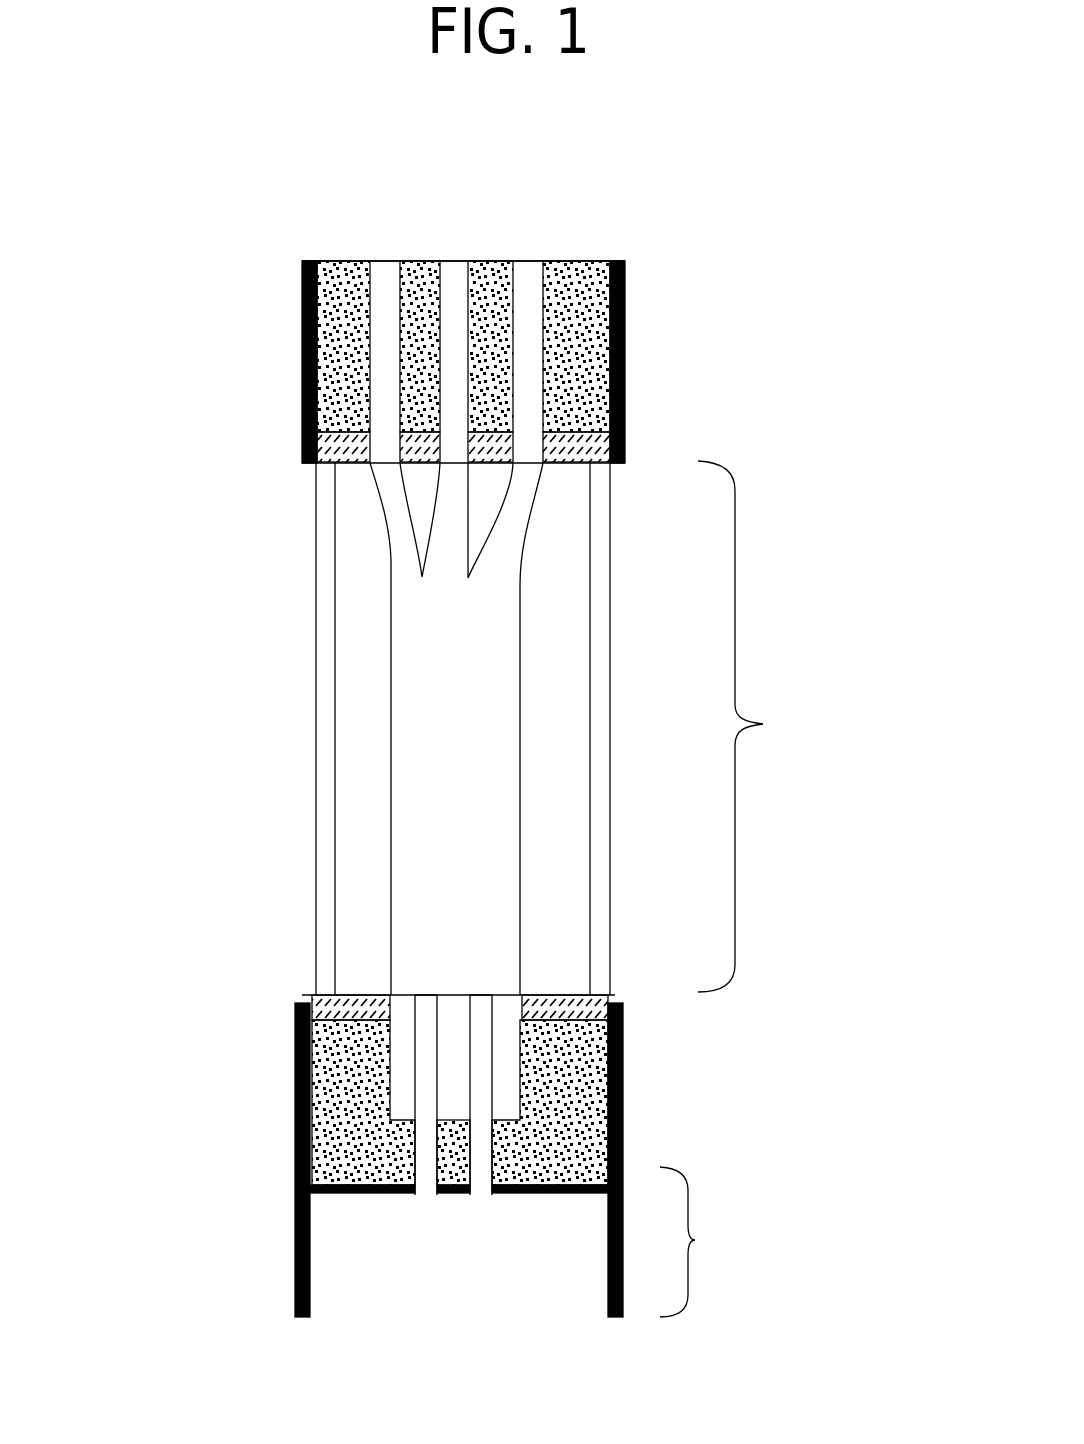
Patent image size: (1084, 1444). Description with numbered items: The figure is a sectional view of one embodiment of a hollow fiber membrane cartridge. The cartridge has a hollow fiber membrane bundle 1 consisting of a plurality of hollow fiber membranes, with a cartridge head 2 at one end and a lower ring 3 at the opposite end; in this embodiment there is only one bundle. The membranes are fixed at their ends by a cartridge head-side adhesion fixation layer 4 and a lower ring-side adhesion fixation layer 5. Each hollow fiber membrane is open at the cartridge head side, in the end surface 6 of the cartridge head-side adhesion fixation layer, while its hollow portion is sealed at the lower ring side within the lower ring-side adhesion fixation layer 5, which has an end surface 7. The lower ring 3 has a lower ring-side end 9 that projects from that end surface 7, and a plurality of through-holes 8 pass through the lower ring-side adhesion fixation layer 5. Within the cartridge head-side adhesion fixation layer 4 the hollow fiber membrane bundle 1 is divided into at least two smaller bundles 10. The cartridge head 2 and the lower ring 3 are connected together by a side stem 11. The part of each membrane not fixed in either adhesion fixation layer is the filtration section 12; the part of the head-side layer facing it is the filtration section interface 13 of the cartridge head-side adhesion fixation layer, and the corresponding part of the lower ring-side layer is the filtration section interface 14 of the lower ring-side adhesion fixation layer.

The hollow fiber membrane bundle 1 is at (489, 809).
The cartridge head 2 is at (625, 310).
The lower ring 3 is at (622, 1125).
The cartridge head-side adhesion fixation layer 4 is at (592, 390).
The lower ring-side adhesion fixation layer 5 is at (557, 1075).
The end surface of cartridge head-side adhesion fixation layer 6 is at (339, 262).
The end surface of lower ring-side adhesion fixation layer 7 is at (555, 1195).
The through-hole 8 is at (480, 1195).
The lower ring-side end 9 is at (694, 1242).
The small bundle 10 is at (398, 543).
The side stem 11 is at (324, 674).
The filtration section 12 is at (763, 726).
The filtration section interface of cartridge head-side adhesion fixation layer 13 is at (348, 465).
The filtration section interface of lower ring-side adhesion fixation layer 14 is at (360, 995).